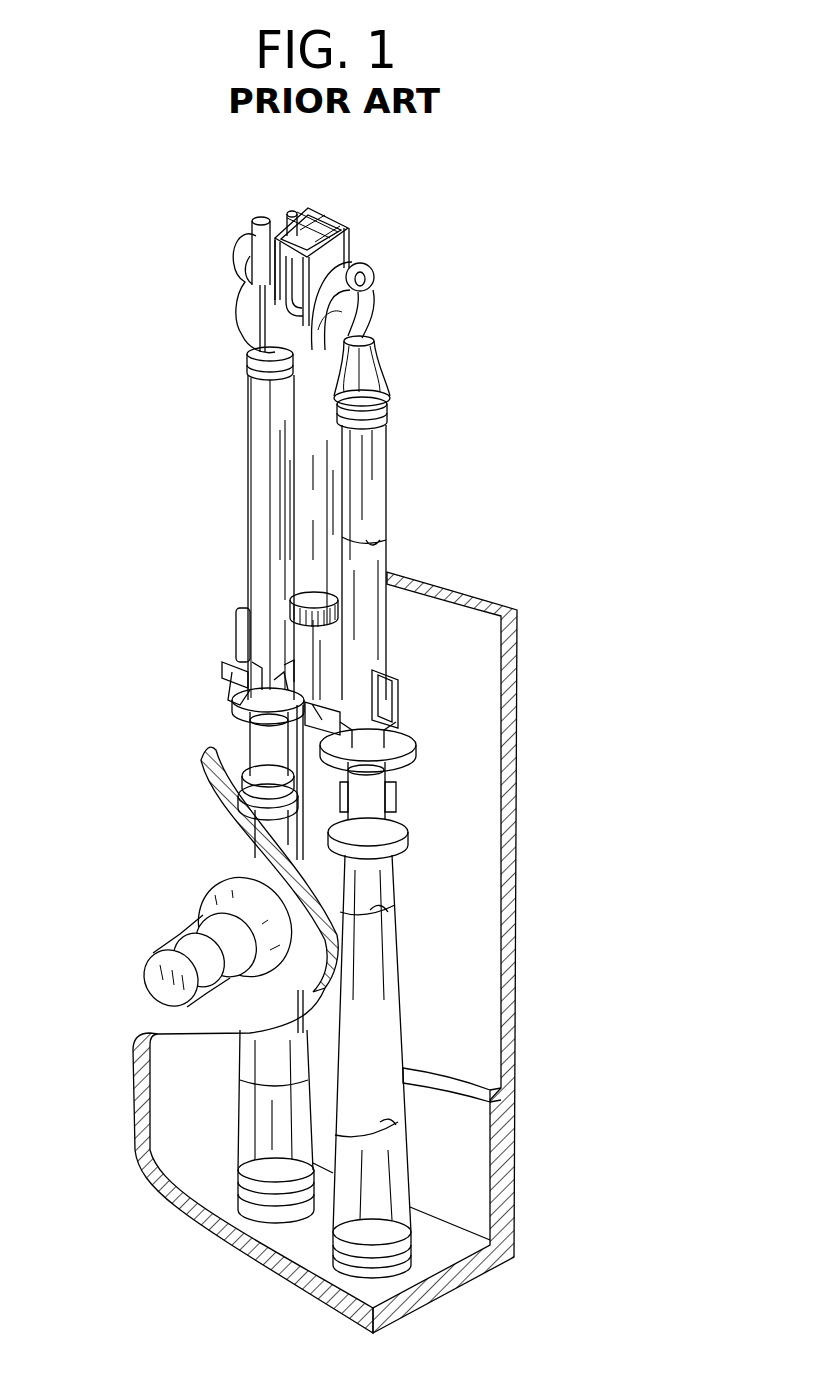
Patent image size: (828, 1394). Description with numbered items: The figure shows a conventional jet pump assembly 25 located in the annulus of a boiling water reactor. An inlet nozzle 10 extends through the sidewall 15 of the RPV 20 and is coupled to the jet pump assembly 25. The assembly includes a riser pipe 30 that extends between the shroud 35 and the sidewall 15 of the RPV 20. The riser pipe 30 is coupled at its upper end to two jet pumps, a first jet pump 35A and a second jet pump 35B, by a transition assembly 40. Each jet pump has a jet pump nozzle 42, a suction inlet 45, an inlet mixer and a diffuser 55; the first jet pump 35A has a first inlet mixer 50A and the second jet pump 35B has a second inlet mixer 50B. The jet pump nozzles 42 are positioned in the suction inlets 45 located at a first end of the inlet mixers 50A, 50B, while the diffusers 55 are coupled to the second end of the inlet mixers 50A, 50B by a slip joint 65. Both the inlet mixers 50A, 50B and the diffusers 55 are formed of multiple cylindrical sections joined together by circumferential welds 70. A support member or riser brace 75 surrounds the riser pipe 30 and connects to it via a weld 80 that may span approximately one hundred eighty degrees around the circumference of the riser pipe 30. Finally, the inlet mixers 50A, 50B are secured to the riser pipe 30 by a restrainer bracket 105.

The inlet nozzle 10 is at (168, 895).
The sidewall 15 is at (205, 770).
The RPV 20 is at (600, 702).
The jet pump assembly 25 is at (216, 449).
The riser pipe 30 is at (322, 487).
The shroud 35 is at (512, 672).
The first jet pump 35A is at (408, 424).
The second jet pump 35B is at (232, 483).
The transition assembly 40 is at (336, 214).
The jet pump nozzle 42 is at (247, 308).
The suction inlet 45 is at (242, 345).
The first inlet mixer 50A is at (386, 628).
The second inlet mixer 50B is at (248, 553).
The diffuser 55 is at (400, 1010).
The slip joint 65 is at (414, 798).
The circumferential weld 70 is at (372, 543).
The support member (riser brace) 75 is at (287, 612).
The weld 80 is at (308, 600).
The restrainer bracket 105 is at (404, 691).